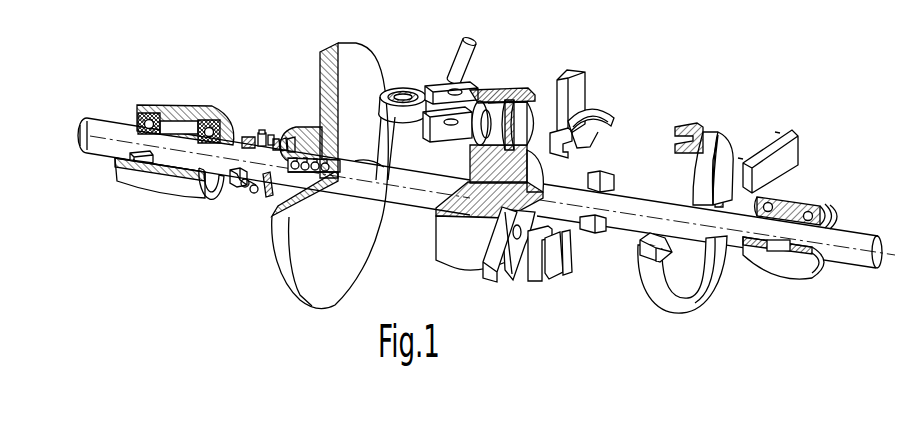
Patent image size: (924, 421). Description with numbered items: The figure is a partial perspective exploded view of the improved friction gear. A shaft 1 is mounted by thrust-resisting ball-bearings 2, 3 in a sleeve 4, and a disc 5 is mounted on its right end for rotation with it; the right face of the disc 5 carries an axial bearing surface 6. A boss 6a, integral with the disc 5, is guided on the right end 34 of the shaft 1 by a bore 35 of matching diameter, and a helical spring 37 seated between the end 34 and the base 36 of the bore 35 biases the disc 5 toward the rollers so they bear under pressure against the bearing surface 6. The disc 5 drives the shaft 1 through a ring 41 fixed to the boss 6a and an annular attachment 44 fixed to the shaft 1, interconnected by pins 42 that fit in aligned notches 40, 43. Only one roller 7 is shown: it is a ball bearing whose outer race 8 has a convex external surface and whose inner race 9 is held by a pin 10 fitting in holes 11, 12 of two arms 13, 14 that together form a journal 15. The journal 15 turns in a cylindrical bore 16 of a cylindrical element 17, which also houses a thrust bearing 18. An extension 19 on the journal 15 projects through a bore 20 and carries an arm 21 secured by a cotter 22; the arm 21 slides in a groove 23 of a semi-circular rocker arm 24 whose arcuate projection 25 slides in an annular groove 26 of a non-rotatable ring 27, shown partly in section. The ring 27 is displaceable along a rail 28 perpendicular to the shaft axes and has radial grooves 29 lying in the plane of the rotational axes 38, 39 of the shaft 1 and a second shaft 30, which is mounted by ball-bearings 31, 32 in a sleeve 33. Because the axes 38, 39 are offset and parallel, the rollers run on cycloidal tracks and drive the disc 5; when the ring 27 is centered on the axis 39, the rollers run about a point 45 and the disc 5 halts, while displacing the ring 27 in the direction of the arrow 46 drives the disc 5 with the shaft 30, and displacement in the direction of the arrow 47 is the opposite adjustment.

The shaft 1 is at (98, 126).
The ball-bearing 2 is at (137, 126).
The ball-bearing 3 is at (218, 122).
The sleeve 4 is at (186, 189).
The disc 5 is at (281, 274).
The axial bearing surface 6 is at (348, 272).
The boss 6a is at (306, 128).
The roller 7 is at (390, 91).
The outer race 8 is at (396, 118).
The inner race 9 is at (404, 89).
The pin 10 is at (456, 52).
The hole 11 is at (446, 84).
The hole 12 is at (449, 126).
The arm 13 is at (448, 91).
The arm 14 is at (436, 132).
The journal 15 is at (483, 112).
The cylindrical bore 16 is at (498, 100).
The cylindrical element 17 is at (521, 92).
The thrust bearing 18 is at (509, 108).
The extension 19 is at (470, 132).
The bore 20 is at (531, 112).
The arm 21 is at (575, 73).
The split pin or cotter 22 is at (505, 275).
The groove 23 is at (536, 283).
The rocker arm or link 24 is at (590, 110).
The arcuate projection or flange 25 is at (612, 125).
The annular groove 26 is at (677, 138).
The ring 27 is at (720, 137).
The rail 28 is at (793, 137).
The groove 29 is at (727, 207).
The shaft 30 is at (853, 236).
The ball-bearing 31 is at (817, 212).
The ball-bearing 32 is at (775, 201).
The sleeve 33 is at (781, 267).
The right end 34 is at (268, 205).
The bore 35 is at (281, 139).
The base 36 is at (340, 178).
The helical spring 37 is at (290, 138).
The rotational axis 38 is at (82, 156).
The rotational axis 39 is at (610, 206).
The notch 40 is at (252, 134).
The ring 41 is at (272, 138).
The pin 42 is at (256, 138).
The notch 43 is at (260, 140).
The annular attachment 44 is at (230, 191).
The point 45 is at (360, 156).
The arrow 46 is at (778, 124).
The arrow 47 is at (746, 153).